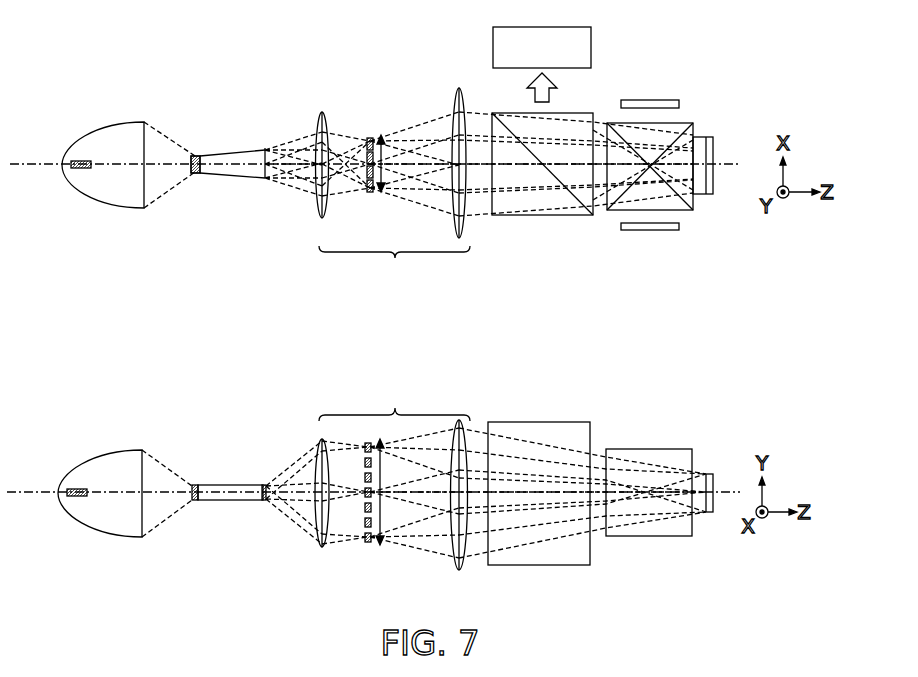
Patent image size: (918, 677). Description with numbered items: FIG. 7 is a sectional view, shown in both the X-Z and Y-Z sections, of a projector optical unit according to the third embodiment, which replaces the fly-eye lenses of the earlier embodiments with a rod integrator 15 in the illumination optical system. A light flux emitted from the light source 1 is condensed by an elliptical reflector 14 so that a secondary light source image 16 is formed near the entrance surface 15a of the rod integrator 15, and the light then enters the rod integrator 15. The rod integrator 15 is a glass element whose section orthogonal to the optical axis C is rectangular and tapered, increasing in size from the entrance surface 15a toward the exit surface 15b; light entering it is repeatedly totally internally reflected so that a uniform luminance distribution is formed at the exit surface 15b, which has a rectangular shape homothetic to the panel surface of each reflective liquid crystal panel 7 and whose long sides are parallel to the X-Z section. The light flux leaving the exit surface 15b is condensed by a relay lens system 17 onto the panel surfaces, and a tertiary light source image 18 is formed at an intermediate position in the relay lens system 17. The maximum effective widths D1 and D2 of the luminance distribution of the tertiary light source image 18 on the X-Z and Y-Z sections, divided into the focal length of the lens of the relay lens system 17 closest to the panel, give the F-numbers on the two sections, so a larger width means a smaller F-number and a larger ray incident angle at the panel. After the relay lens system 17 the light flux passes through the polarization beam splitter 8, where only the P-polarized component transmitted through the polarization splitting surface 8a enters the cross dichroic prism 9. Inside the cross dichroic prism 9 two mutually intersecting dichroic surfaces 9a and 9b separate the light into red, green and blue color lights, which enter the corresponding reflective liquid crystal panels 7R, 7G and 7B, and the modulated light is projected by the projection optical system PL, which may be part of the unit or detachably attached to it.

The light source 1 is at (100, 476).
The elliptical reflector 14 is at (83, 525).
The rod integrator 15 is at (236, 187).
The entrance surface 15a is at (193, 155).
The exit surface 15b is at (265, 150).
The secondary light source image 16 is at (193, 187).
The relay lens system 17 is at (394, 258).
The tertiary light source image 18 is at (368, 208).
The polarization beam splitter 8 is at (540, 228).
The polarization splitting surface 8a is at (591, 216).
The cross dichroic prism 9 is at (631, 218).
The dichroic surface 9a is at (681, 198).
The dichroic surface 9b is at (672, 143).
The reflective liquid crystal panel 7 is at (710, 200).
The reflective liquid crystal panel for green light 7G is at (731, 165).
The reflective liquid crystal panel for red light 7R is at (650, 246).
The reflective liquid crystal panel for blue light 7B is at (650, 90).
The projection optical system PL is at (595, 50).
The optical axis C is at (29, 170).
The maximum effective width on X-Z section D1 is at (387, 151).
The maximum effective width on Y-Z section D2 is at (390, 507).